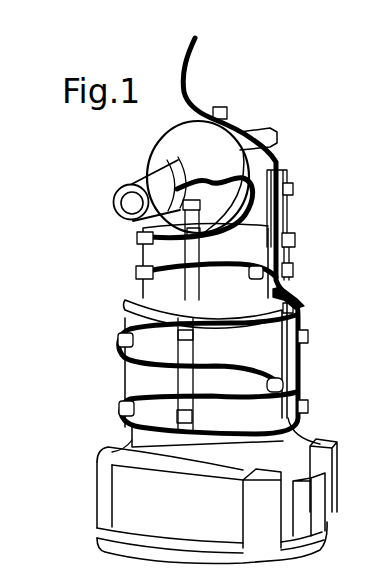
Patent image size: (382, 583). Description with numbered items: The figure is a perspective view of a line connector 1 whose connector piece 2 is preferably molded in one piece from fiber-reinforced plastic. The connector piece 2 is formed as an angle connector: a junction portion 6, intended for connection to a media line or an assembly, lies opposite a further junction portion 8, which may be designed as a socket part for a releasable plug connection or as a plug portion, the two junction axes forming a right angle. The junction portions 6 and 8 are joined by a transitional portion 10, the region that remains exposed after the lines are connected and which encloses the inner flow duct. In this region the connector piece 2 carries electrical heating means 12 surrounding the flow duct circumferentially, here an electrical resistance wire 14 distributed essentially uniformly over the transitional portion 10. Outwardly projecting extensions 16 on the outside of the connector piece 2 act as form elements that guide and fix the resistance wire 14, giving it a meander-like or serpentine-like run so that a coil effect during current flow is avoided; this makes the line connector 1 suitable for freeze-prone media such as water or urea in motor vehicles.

The line connector 1 is at (79, 252).
The connector piece 2 is at (105, 312).
The junction portion 6 is at (132, 188).
The further junction portion 8 is at (95, 511).
The transitional portion 10 is at (262, 352).
The electrical heating means 12 is at (311, 288).
The electrical resistance wire 14 is at (117, 351).
The outwardly projecting extensions 16 is at (140, 268).